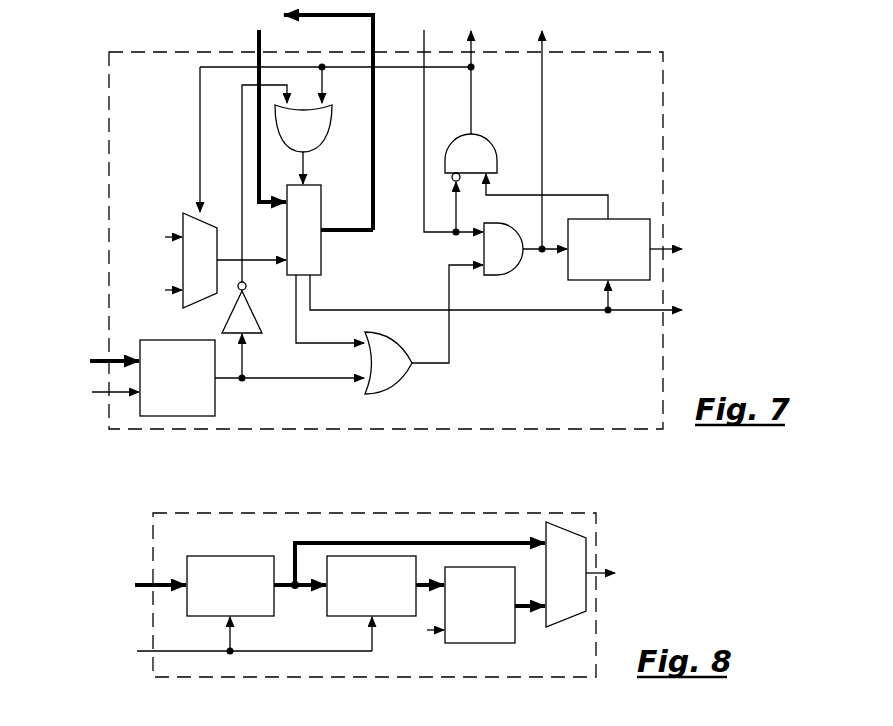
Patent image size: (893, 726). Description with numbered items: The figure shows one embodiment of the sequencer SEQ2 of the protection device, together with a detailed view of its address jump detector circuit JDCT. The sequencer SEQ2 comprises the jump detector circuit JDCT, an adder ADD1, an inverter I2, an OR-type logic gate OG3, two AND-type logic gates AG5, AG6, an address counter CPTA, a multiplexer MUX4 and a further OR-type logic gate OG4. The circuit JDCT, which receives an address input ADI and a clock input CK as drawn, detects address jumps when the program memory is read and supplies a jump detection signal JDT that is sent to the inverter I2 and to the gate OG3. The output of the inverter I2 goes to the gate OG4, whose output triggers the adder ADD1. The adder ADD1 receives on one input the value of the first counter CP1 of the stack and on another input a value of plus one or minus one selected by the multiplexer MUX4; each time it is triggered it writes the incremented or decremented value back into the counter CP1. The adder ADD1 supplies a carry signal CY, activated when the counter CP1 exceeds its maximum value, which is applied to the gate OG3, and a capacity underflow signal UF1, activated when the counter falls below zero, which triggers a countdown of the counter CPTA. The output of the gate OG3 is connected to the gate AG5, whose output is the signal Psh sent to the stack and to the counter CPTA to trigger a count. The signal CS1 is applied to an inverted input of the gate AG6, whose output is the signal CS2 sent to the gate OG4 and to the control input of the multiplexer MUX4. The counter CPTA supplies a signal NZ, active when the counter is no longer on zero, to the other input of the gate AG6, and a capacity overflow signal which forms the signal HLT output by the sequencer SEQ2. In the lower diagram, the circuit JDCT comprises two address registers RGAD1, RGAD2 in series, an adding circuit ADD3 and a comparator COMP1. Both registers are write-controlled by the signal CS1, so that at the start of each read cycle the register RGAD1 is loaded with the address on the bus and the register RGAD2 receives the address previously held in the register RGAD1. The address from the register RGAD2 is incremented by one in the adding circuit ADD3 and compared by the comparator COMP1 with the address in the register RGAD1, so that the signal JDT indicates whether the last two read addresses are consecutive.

In FIG. 7, the sequencer SEQ2 is at (652, 90).
In FIG. 7, the first counter CP1 is at (306, 117).
In FIG. 7, the OR-type logic gate OG4 is at (318, 134).
In FIG. 7, the adder ADD1 is at (298, 209).
In FIG. 7, the multiplexer MUX4 is at (194, 238).
In FIG. 7, the inverter I2 is at (252, 311).
In FIG. 7, the carry signal CY is at (330, 309).
In FIG. 7, the capacity underflow signal UF1 is at (517, 298).
In FIG. 7, the address jump detector circuit JDCT is at (205, 389).
In FIG. 8, the address jump detector circuit JDCT is at (222, 551).
In FIG. 7, the address input ADI is at (84, 361).
In FIG. 8, the address input ADI is at (130, 585).
In FIG. 7, the clock signal CK is at (99, 392).
In FIG. 7, the jump detection signal JDT is at (289, 393).
In FIG. 8, the jump detection signal JDT is at (619, 573).
In FIG. 7, the OR-type logic gate OG3 is at (393, 372).
In FIG. 7, the control signal CS1 is at (444, 121).
In FIG. 8, the control signal CS1 is at (233, 639).
In FIG. 7, the control signal CS2 is at (470, 36).
In FIG. 7, the push signal Psh is at (541, 143).
In FIG. 7, the AND-type logic gate AG6 is at (482, 148).
In FIG. 7, the non-zero signal NZ is at (581, 185).
In FIG. 7, the AND-type logic gate AG5 is at (508, 266).
In FIG. 7, the address counter CPTA is at (578, 261).
In FIG. 7, the halt signal HLT is at (686, 249).
In FIG. 8, the address register RGAD1 is at (268, 596).
In FIG. 8, the address register RGAD2 is at (410, 596).
In FIG. 8, the adder ADD3 is at (452, 614).
In FIG. 8, the comparator COMP1 is at (560, 546).